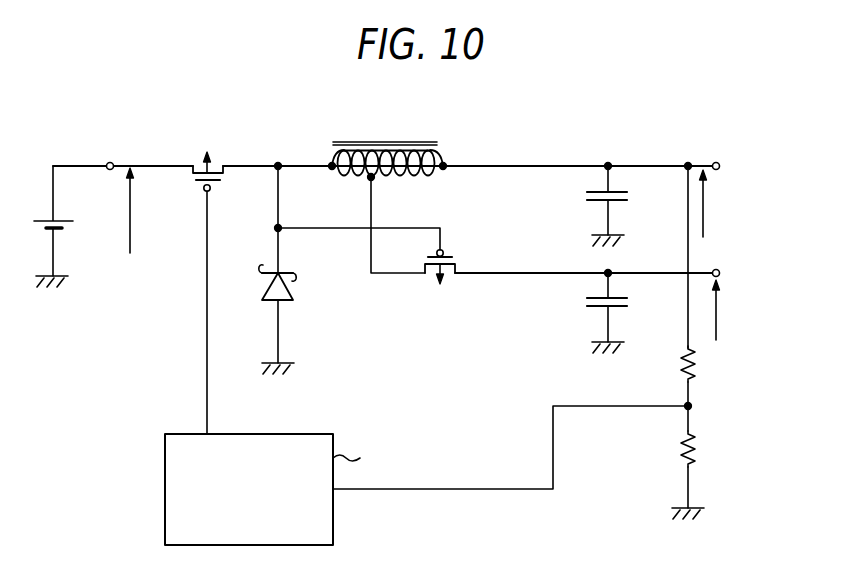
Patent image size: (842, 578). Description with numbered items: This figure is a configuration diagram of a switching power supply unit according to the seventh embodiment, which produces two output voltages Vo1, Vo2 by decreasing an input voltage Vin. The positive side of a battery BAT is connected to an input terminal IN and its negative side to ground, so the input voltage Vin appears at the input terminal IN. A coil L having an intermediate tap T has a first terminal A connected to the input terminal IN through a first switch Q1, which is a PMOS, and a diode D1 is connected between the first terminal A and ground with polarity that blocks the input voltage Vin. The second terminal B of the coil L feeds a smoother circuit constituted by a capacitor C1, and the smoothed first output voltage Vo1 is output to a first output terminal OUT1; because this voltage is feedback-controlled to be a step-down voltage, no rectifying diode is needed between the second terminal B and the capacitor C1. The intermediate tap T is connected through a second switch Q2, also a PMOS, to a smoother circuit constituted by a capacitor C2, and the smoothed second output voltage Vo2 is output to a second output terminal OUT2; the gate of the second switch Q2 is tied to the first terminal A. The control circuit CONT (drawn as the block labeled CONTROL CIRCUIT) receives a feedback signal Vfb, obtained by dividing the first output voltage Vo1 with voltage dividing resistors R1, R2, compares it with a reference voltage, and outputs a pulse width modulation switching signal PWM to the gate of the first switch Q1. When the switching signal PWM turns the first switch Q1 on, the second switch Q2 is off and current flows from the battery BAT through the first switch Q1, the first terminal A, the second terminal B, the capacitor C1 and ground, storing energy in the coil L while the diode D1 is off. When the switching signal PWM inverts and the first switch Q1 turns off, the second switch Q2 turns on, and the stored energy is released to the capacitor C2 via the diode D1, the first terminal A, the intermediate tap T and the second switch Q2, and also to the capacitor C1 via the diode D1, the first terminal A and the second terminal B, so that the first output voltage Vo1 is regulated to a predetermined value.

The battery BAT is at (65, 226).
The input terminal IN is at (110, 154).
The input voltage Vin is at (145, 210).
The first switch Q1 is at (208, 280).
The switching signal PWM is at (240, 420).
The diode D1 is at (262, 270).
The coil L is at (388, 147).
The first terminal A is at (319, 153).
The second terminal B is at (453, 153).
The intermediate tap T is at (388, 224).
The second switch Q2 is at (366, 272).
The capacitor C1 is at (622, 206).
The capacitor C2 is at (622, 313).
The first output terminal OUT1 is at (745, 166).
The second output terminal OUT2 is at (745, 274).
The first output voltage Vo1 is at (720, 203).
The second output voltage Vo2 is at (733, 310).
The voltage dividing resistor R1 is at (671, 376).
The voltage dividing resistor R2 is at (676, 462).
The feedback signal Vfb is at (471, 476).
The control circuit CONT is at (368, 446).
The control circuit CONTROL is at (249, 489).